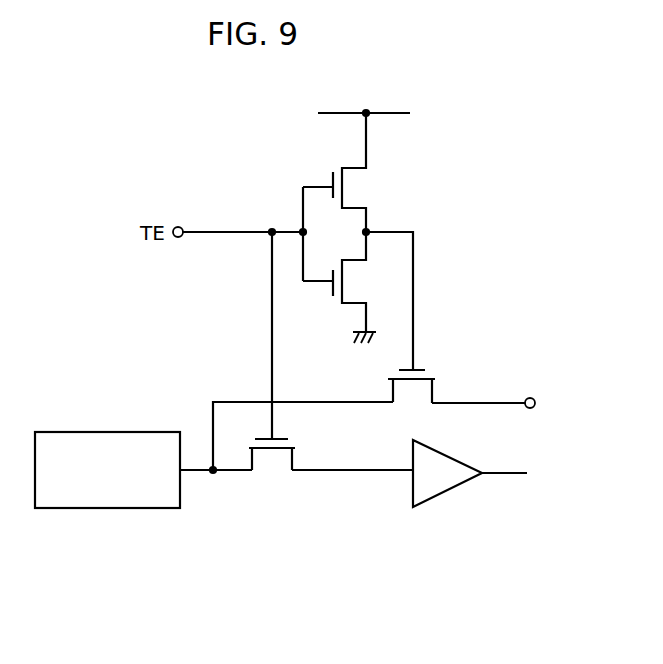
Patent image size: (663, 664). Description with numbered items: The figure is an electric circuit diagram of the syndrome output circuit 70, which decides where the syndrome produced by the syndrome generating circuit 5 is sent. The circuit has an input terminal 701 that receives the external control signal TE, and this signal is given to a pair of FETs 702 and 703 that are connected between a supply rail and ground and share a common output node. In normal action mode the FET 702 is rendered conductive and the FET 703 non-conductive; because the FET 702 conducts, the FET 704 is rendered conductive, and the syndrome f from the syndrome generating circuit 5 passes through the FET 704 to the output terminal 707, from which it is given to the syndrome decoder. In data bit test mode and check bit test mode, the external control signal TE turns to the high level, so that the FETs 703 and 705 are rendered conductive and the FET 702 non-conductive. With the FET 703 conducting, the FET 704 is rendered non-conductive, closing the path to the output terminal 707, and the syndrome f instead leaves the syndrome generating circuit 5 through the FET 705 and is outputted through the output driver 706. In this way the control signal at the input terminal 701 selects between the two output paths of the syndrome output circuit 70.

The syndrome output circuit 70 is at (522, 133).
The input terminal 701 is at (181, 227).
The FET 702 is at (331, 182).
The FET 703 is at (333, 288).
The FET 704 is at (420, 369).
The FET 705 is at (277, 439).
The output driver 706 is at (432, 447).
The output terminal 707 is at (535, 399).
The syndrome generating circuit 5 is at (100, 431).